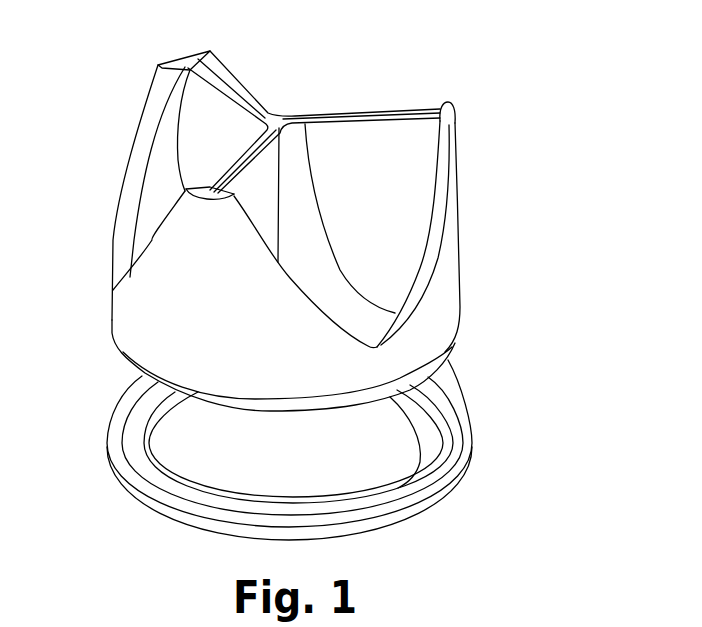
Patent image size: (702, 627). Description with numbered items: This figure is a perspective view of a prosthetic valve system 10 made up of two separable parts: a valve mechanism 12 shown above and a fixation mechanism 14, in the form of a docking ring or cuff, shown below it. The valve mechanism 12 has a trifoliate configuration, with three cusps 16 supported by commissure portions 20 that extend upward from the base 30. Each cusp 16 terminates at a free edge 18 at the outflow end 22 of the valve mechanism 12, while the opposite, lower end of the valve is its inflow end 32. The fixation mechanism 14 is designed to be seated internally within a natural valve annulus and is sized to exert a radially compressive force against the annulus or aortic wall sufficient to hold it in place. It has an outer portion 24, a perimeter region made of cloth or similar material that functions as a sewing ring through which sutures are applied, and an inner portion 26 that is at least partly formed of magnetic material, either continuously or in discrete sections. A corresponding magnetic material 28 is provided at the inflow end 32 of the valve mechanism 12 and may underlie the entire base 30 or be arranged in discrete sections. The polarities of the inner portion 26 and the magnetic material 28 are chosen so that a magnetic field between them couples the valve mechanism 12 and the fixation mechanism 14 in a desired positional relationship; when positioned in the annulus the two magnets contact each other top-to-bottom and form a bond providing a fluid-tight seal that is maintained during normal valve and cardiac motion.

The prosthetic valve system 10 is at (304, 276).
The valve mechanism 12 is at (165, 258).
The fixation mechanism 14 is at (277, 450).
The cusp 16 is at (367, 167).
The free edge 18 is at (244, 94).
The commissure portion 20 is at (152, 118).
The outflow end 22 is at (397, 110).
The outer portion 24 is at (460, 403).
The inner portion 26 is at (441, 438).
The magnetic material 28 is at (148, 377).
The base 30 is at (286, 211).
The inflow end 32 is at (293, 407).